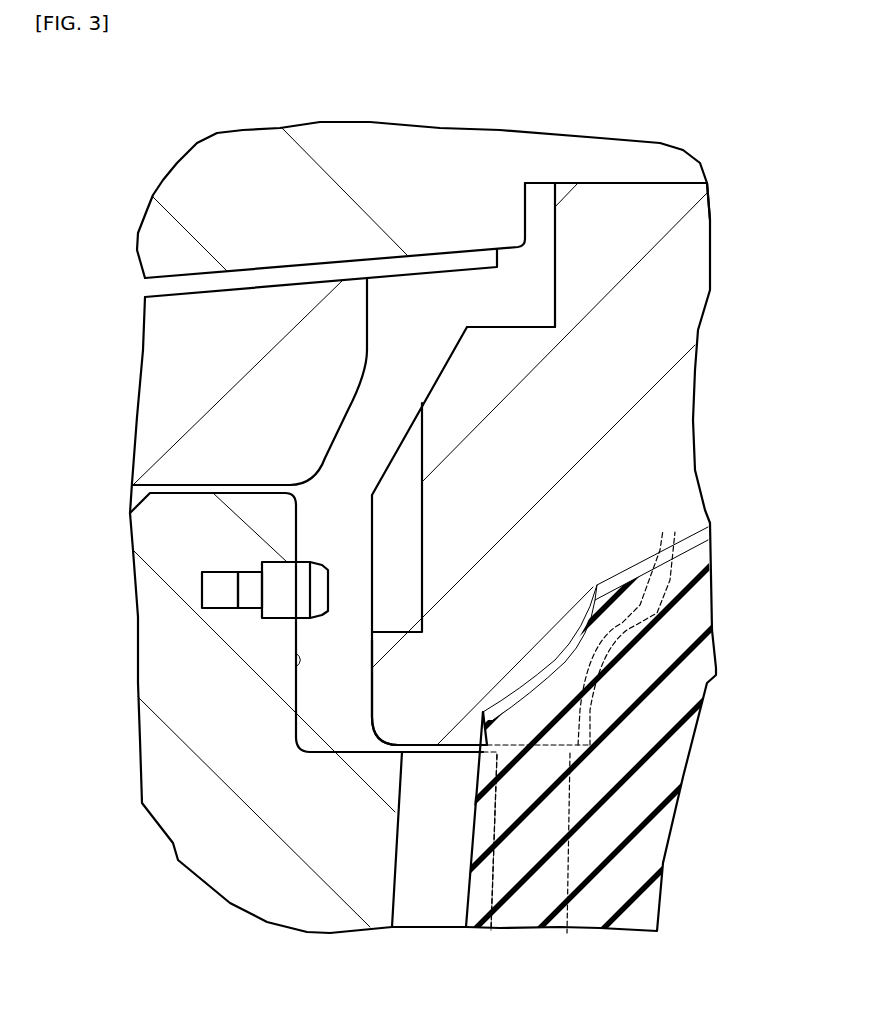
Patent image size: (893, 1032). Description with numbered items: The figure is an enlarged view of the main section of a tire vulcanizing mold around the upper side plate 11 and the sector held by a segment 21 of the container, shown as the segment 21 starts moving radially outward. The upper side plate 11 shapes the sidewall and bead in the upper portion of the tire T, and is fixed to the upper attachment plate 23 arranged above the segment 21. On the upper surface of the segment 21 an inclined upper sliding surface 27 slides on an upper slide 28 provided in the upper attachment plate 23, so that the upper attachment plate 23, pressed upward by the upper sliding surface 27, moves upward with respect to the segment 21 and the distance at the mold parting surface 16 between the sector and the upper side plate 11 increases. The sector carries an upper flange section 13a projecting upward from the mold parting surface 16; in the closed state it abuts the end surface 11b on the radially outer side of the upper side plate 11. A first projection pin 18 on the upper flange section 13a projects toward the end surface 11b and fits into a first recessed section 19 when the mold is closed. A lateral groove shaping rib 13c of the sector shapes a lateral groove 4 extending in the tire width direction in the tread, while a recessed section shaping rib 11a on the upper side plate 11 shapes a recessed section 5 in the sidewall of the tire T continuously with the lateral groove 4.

The lateral groove 4 is at (562, 875).
The recessed section 5 is at (627, 627).
The upper side plate 11 is at (490, 410).
The recessed section shaping rib 11a is at (547, 743).
The end surface 11b is at (373, 695).
The upper flange section 13a is at (300, 664).
The lateral groove shaping rib 13c is at (491, 876).
The mold parting surface 16 is at (392, 750).
The first projection pin 18 is at (287, 573).
The first recessed section 19 is at (422, 538).
The segment 21 is at (340, 315).
The upper attachment plate 23 is at (500, 218).
The upper sliding surface 27 is at (258, 288).
The upper slide 28 is at (428, 281).
The tire T is at (637, 863).